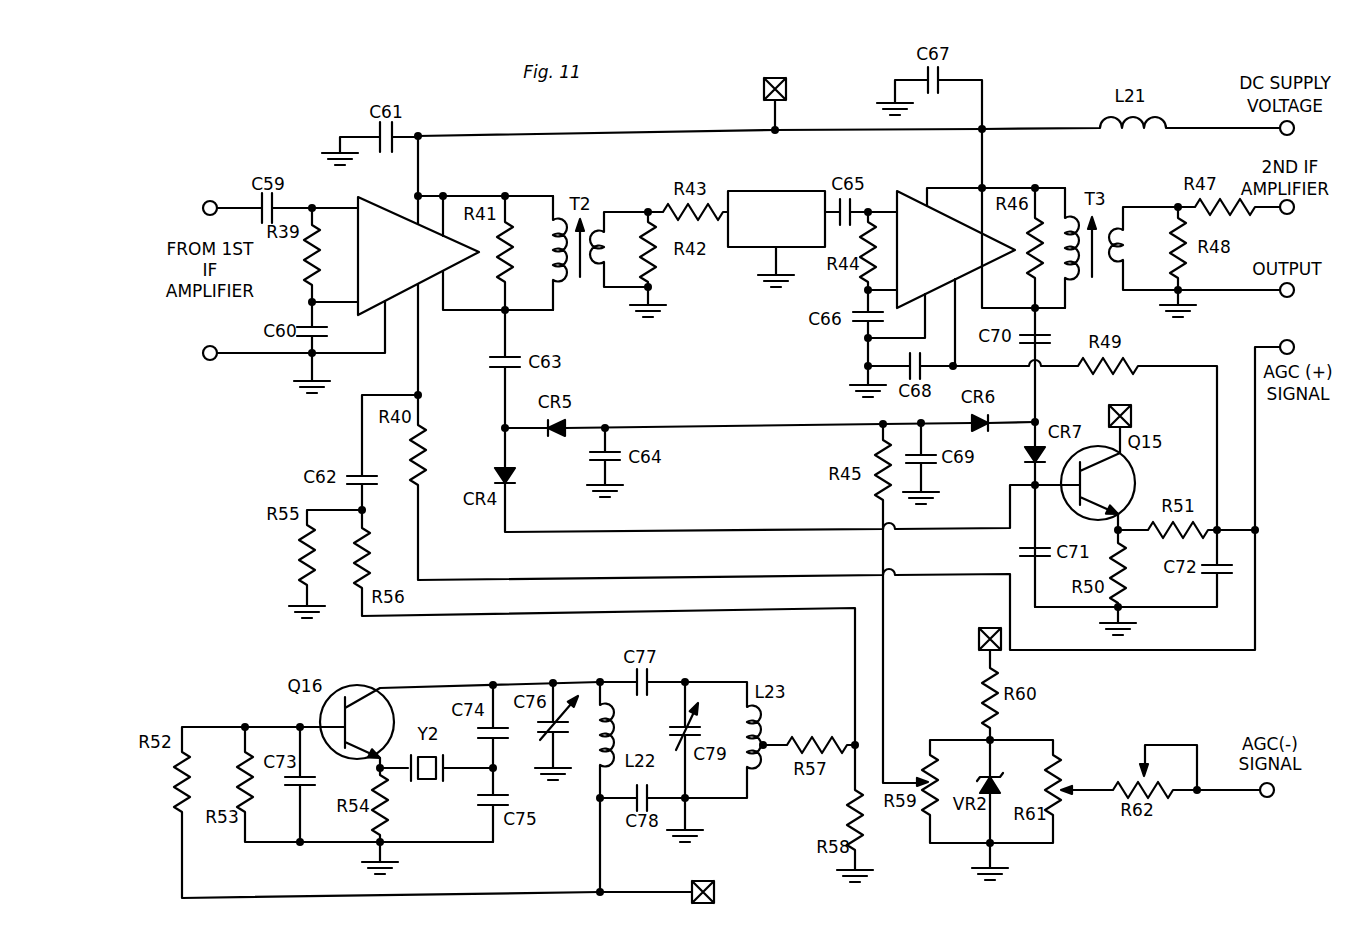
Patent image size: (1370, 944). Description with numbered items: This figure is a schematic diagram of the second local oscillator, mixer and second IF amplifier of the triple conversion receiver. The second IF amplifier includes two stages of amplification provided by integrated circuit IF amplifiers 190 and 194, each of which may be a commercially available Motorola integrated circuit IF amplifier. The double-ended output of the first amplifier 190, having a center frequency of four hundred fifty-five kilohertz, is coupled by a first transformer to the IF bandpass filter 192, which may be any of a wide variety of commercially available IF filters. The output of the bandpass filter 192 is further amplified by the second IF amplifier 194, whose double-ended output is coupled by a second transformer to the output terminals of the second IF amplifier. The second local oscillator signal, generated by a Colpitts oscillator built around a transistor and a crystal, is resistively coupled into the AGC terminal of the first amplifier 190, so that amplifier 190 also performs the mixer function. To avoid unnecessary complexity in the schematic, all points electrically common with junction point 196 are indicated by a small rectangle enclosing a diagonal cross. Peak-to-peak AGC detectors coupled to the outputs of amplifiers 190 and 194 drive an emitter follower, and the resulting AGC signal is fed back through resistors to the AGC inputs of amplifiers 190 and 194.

The integrated circuit IF amplifier 190 is at (395, 209).
The IF bandpass filter 192 is at (799, 190).
The integrated circuit IF amplifier 194 is at (913, 190).
The junction point 196 is at (778, 127).